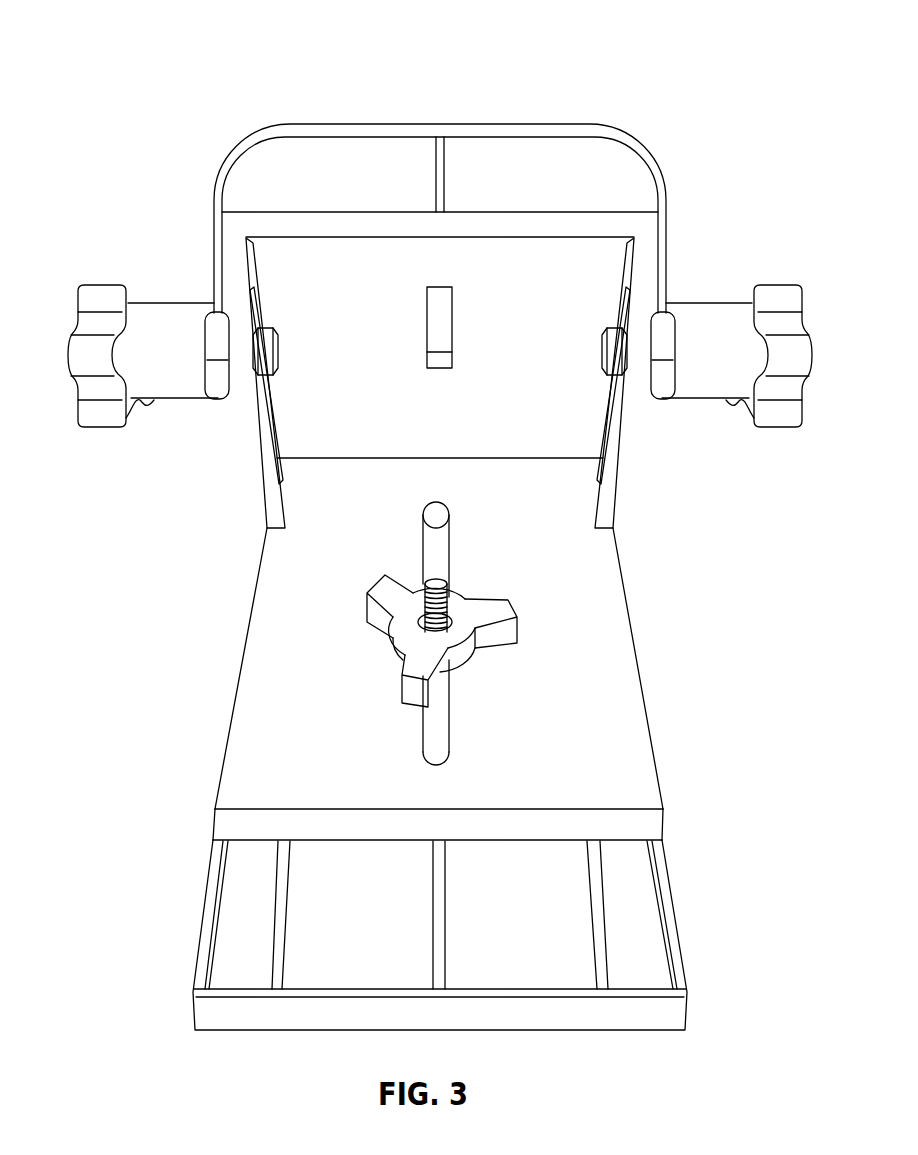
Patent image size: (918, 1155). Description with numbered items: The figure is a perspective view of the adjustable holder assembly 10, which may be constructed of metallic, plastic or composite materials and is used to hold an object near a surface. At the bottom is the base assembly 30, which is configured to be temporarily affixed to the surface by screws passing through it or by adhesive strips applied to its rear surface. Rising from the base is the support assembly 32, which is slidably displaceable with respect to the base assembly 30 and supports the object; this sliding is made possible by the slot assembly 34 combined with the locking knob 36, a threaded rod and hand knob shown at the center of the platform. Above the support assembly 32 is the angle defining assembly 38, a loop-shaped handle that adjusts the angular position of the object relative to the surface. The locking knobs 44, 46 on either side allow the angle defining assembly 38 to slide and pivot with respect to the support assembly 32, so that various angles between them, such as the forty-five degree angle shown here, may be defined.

The adjustable holder assembly 10 is at (103, 45).
The base assembly 30 is at (677, 912).
The support assembly 32 is at (617, 450).
The slot assembly 34 is at (437, 538).
The locking knob 36 is at (467, 657).
The angle defining assembly 38 is at (227, 178).
The locking knob 44 is at (160, 403).
The locking knob 46 is at (778, 412).